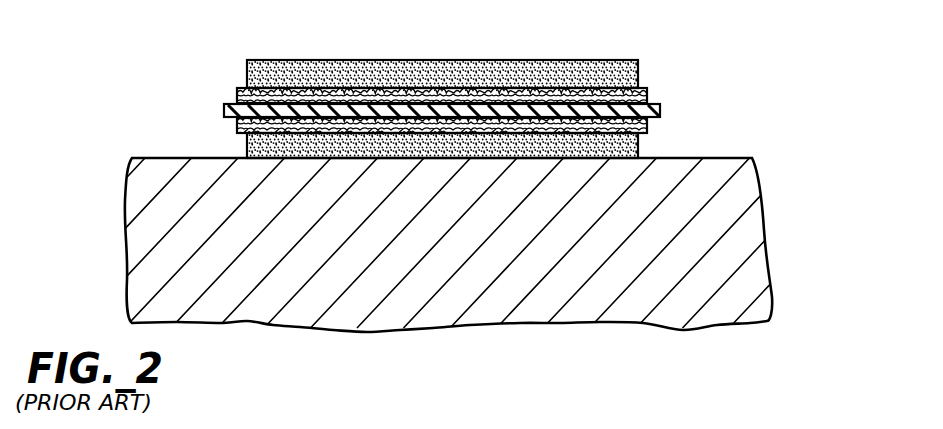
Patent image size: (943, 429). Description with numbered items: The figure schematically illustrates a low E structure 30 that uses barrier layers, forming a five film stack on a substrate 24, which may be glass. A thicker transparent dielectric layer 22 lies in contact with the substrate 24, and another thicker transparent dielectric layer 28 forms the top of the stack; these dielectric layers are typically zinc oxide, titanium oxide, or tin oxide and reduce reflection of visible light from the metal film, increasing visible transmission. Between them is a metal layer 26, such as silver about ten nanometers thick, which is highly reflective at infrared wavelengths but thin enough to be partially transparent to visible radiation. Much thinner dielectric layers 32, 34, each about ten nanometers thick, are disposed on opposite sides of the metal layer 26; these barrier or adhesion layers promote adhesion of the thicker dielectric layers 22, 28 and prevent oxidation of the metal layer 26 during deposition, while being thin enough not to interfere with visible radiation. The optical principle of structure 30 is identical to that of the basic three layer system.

The transparent dielectric layer 22 is at (638, 148).
The substrate 24 is at (752, 265).
The metal layer 26 is at (662, 112).
The transparent dielectric layer 28 is at (638, 78).
The structure 30 is at (498, 79).
The dielectric layer 32 is at (648, 93).
The dielectric layer 34 is at (648, 127).